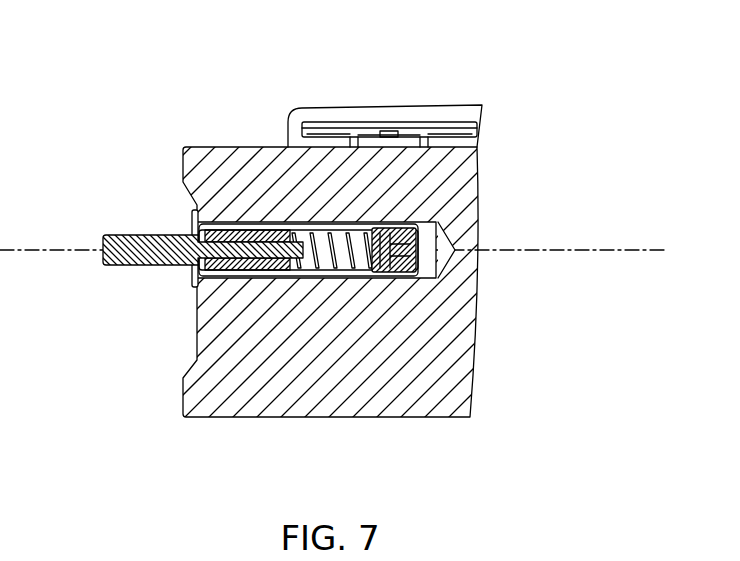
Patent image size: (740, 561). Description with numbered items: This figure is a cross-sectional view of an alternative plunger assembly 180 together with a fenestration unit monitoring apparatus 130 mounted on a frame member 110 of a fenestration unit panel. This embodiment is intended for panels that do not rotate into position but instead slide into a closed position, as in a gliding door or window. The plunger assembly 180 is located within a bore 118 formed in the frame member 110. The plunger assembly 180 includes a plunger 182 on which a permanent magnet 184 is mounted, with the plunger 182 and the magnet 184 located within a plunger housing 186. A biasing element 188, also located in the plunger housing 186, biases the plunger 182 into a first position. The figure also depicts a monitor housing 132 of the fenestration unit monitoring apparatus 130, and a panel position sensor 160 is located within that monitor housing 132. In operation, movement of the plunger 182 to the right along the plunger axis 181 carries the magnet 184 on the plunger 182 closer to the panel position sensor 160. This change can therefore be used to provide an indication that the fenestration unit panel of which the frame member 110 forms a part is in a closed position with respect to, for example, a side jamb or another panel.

The frame member 110 is at (437, 362).
The bore 118 is at (424, 242).
The fenestration unit monitoring apparatus 130 is at (395, 129).
The monitor housing 132 is at (333, 108).
The panel position sensor 160 is at (388, 127).
The plunger assembly 180 is at (139, 274).
The plunger axis 181 is at (568, 250).
The plunger 182 is at (131, 235).
The permanent magnet 184 is at (256, 232).
The plunger housing 186 is at (193, 283).
The biasing element 188 is at (350, 265).